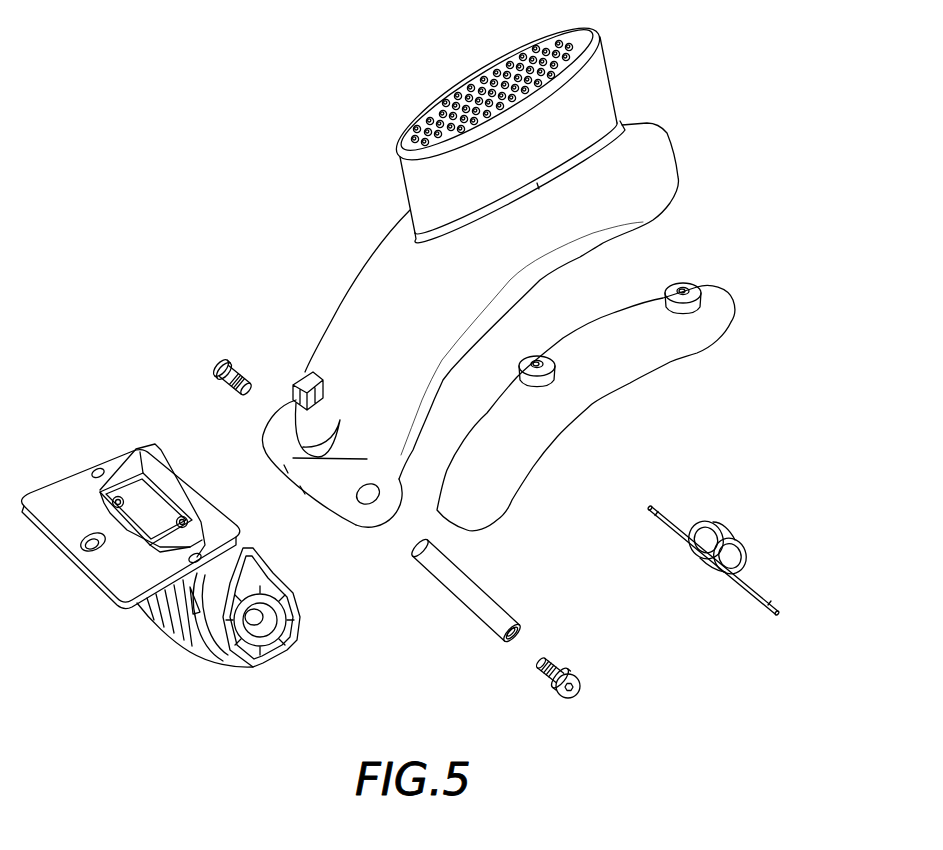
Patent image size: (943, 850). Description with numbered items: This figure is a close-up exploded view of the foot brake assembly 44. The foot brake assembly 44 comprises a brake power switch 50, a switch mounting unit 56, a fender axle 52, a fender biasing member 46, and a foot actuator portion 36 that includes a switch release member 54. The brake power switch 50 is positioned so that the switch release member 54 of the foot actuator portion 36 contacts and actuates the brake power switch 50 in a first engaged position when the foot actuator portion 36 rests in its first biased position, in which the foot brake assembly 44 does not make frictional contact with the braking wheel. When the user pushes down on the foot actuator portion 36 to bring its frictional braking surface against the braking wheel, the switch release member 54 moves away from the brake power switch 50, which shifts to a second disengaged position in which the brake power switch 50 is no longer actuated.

The foot actuator portion 36 is at (604, 64).
The foot brake assembly 44 is at (205, 243).
The fender biasing member 46 is at (682, 527).
The brake power switch 50 is at (147, 500).
The fender axle 52 is at (463, 587).
The switch release member 54 is at (305, 373).
The switch mounting unit 56 is at (133, 577).